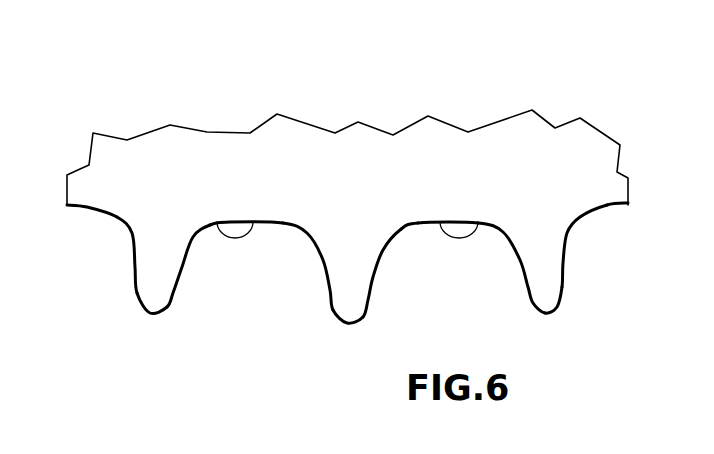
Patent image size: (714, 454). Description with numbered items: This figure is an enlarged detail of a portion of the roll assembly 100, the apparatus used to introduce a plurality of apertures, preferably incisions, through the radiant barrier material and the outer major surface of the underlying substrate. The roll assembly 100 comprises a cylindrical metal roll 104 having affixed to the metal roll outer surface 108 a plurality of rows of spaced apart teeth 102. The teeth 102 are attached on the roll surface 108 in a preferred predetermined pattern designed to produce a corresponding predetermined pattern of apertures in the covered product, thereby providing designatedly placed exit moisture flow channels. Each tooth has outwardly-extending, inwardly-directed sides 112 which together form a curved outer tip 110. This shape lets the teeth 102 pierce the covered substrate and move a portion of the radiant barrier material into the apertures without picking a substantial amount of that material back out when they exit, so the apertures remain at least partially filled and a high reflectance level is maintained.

The roll assembly 100 is at (214, 113).
The teeth 102 is at (155, 297).
The cylindrical metal roll 104 is at (377, 195).
The metal roll outer surface 108 is at (217, 222).
The curved outer tip 110 is at (147, 315).
The sides 112 is at (133, 263).